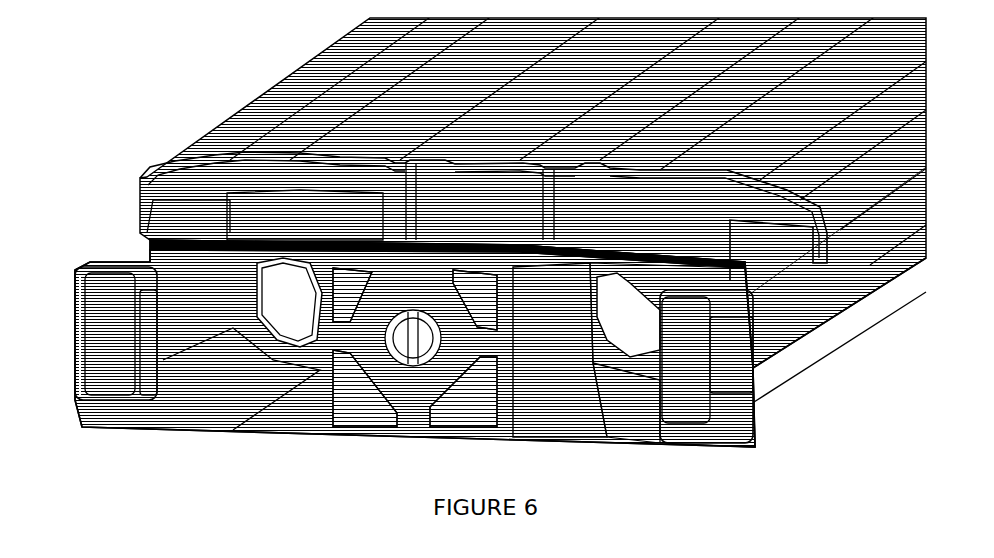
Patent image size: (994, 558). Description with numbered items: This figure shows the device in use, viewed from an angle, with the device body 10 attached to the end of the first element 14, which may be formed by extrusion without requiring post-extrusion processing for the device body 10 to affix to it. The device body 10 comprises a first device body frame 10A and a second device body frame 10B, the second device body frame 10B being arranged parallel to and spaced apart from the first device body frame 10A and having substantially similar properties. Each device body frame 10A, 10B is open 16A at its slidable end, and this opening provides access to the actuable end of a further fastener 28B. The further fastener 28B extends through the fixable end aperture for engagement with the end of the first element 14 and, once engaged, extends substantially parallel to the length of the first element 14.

The first element 14 is at (375, 38).
The device body 10 is at (415, 343).
The first device body frame 10A is at (276, 213).
The second device body frame 10B is at (626, 233).
The open slidable end 16A is at (192, 304).
The further fastener 28B is at (270, 292).